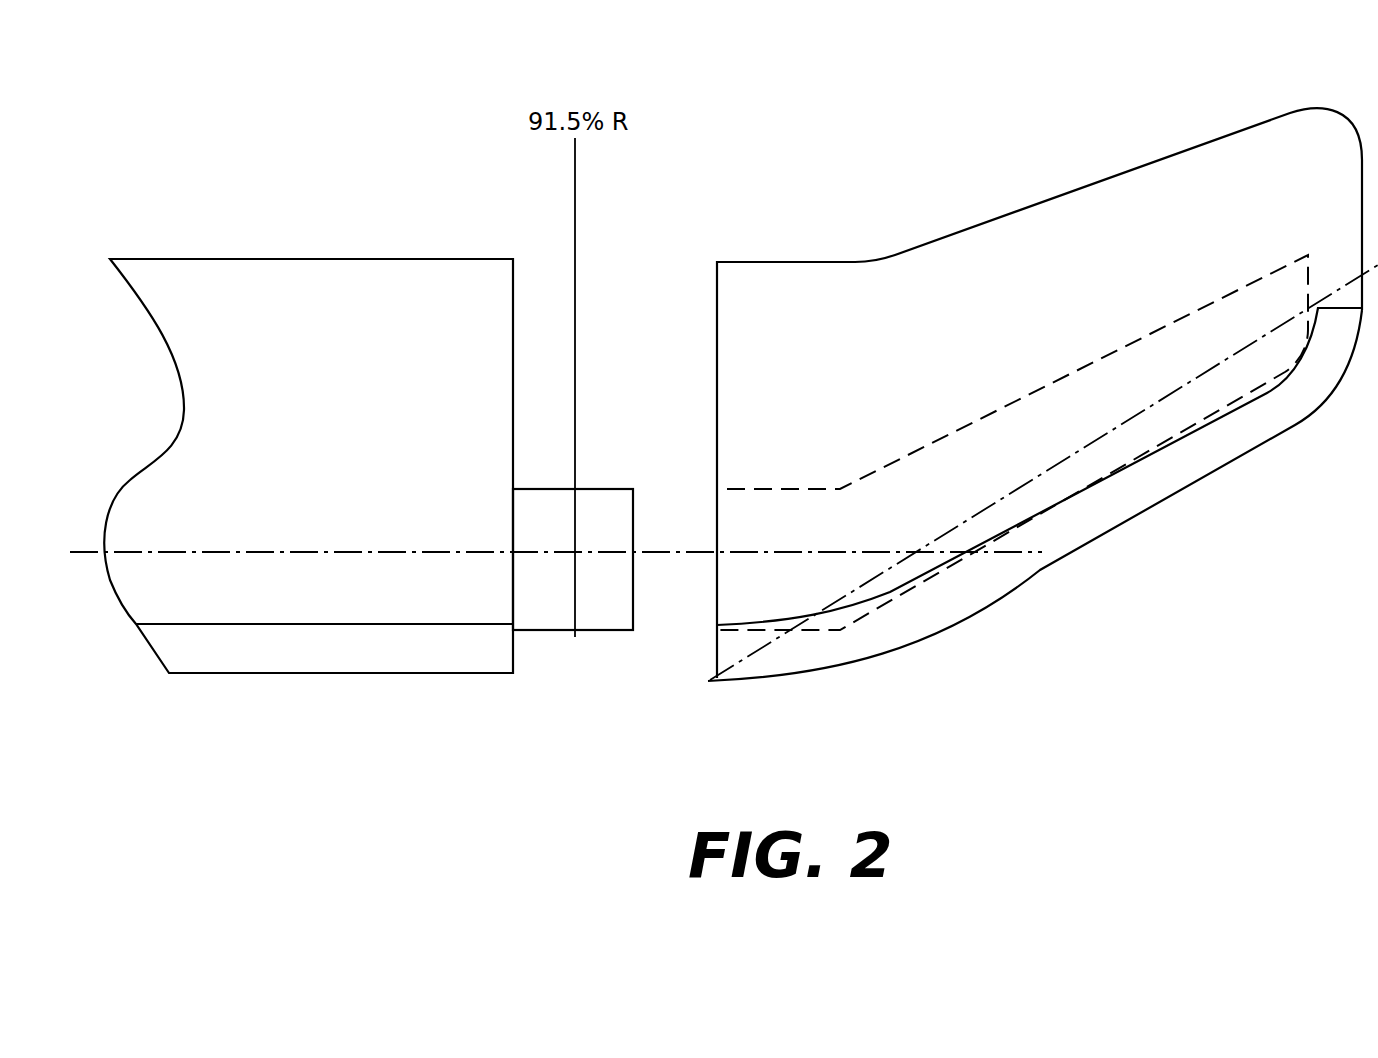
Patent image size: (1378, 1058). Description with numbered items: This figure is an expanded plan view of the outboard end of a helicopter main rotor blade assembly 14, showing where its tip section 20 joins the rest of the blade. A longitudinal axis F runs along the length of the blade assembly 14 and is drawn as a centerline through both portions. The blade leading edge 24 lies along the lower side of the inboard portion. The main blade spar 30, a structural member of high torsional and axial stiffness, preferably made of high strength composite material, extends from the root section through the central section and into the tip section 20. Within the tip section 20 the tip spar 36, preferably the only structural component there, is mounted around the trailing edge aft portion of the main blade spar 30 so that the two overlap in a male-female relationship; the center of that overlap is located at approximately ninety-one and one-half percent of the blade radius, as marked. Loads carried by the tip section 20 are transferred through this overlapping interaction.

The main rotor blade assembly 14 is at (308, 457).
The tip section 20 is at (1043, 380).
The blade leading edge 24 is at (265, 660).
The main blade spar 30 is at (562, 575).
The tip spar 36 is at (1038, 458).
The longitudinal axis F is at (404, 552).